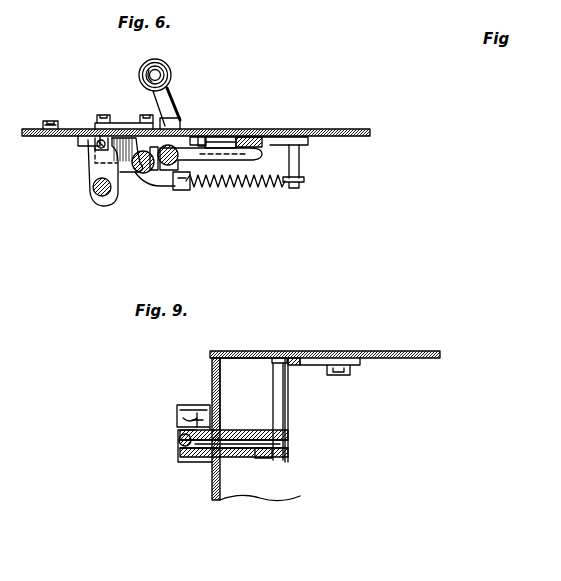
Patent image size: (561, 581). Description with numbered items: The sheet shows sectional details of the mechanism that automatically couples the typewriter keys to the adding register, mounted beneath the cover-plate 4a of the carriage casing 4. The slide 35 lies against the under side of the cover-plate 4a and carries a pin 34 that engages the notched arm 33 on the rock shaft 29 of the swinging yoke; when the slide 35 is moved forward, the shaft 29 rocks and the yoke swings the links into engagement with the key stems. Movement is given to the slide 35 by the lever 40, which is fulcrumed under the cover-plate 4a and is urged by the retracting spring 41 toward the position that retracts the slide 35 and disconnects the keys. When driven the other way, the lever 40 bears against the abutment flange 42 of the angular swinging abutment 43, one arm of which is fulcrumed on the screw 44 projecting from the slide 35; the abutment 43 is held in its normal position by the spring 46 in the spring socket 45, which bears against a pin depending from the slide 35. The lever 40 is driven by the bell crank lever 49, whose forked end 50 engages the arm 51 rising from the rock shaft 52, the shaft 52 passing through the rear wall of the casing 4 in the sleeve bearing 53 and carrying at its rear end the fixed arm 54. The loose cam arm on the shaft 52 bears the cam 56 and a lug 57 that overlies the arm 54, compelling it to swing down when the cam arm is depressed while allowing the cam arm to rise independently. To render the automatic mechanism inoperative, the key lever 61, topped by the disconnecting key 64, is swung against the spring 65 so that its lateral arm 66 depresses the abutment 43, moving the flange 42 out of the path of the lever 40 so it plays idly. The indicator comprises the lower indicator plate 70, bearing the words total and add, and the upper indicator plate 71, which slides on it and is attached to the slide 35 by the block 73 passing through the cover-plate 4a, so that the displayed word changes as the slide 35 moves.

In FIG. 6, the cover-plate 4a is at (337, 129).
In FIG. 9, the cover-plate 4a is at (248, 351).
In FIG. 9, the carriage casing 4 is at (212, 368).
In FIG. 6, the rock shaft 29 is at (102, 196).
In FIG. 6, the notched arm 33 is at (95, 170).
In FIG. 6, the pin 34 is at (95, 148).
In FIG. 6, the slide 35 is at (206, 142).
In FIG. 6, the lever 40 is at (255, 137).
In FIG. 6, the retracting spring 41 is at (129, 155).
In FIG. 6, the abutment flange 42 is at (255, 137).
In FIG. 6, the swinging abutment 43 is at (222, 160).
In FIG. 6, the screw 44 is at (172, 177).
In FIG. 6, the spring socket 45 is at (145, 173).
In FIG. 6, the spring 46 is at (152, 173).
In FIG. 9, the bell crank lever 49 is at (350, 363).
In FIG. 9, the forked end 50 is at (254, 410).
In FIG. 9, the arm 51 is at (277, 393).
In FIG. 9, the rock shaft 52 is at (253, 458).
In FIG. 9, the sleeve bearing 53 is at (237, 432).
In FIG. 9, the arm 54 is at (179, 440).
In FIG. 9, the cam 56 is at (178, 420).
In FIG. 9, the lug 57 is at (197, 413).
In FIG. 6, the key lever 61 is at (170, 100).
In FIG. 6, the disconnecting key 64 is at (168, 68).
In FIG. 6, the spring 65 is at (243, 181).
In FIG. 6, the arm 66 is at (201, 138).
In FIG. 6, the lower indicator plate 70 is at (68, 127).
In FIG. 6, the upper indicator plate 71 is at (118, 126).
In FIG. 6, the block 73 is at (78, 140).